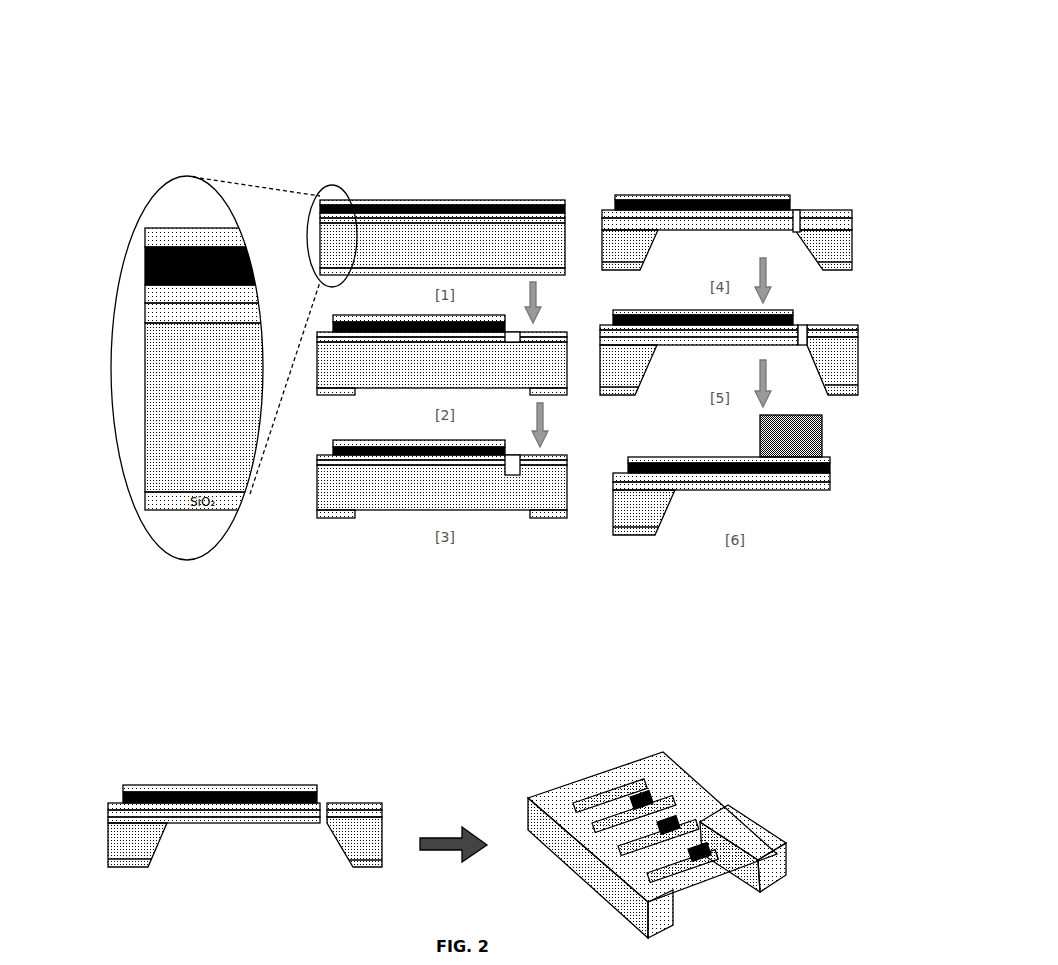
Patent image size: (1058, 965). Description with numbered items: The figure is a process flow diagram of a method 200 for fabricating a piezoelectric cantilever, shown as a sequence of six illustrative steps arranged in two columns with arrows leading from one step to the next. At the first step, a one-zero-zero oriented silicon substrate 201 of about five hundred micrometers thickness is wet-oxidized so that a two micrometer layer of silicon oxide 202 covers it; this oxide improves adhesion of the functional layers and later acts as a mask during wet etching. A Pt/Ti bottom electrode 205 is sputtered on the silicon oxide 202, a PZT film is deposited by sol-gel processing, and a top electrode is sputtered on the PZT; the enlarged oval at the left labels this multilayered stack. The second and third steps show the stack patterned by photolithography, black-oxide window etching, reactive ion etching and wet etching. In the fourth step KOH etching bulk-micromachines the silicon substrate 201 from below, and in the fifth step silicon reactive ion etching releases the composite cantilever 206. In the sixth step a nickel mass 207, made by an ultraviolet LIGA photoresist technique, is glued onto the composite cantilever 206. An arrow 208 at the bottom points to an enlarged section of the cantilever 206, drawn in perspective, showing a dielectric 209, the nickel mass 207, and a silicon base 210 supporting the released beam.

The method for fabricating a cantilever 200 is at (728, 73).
The silicon substrate 201 is at (145, 426).
The silicon oxide layer 202 is at (145, 316).
The Pt/Ti bottom electrode 205 is at (145, 294).
The composite cantilever 206 is at (799, 326).
The nickel mass 207 is at (822, 437).
The arrow 208 is at (439, 837).
The dielectric 209 is at (575, 783).
The silicon base 210 is at (783, 872).